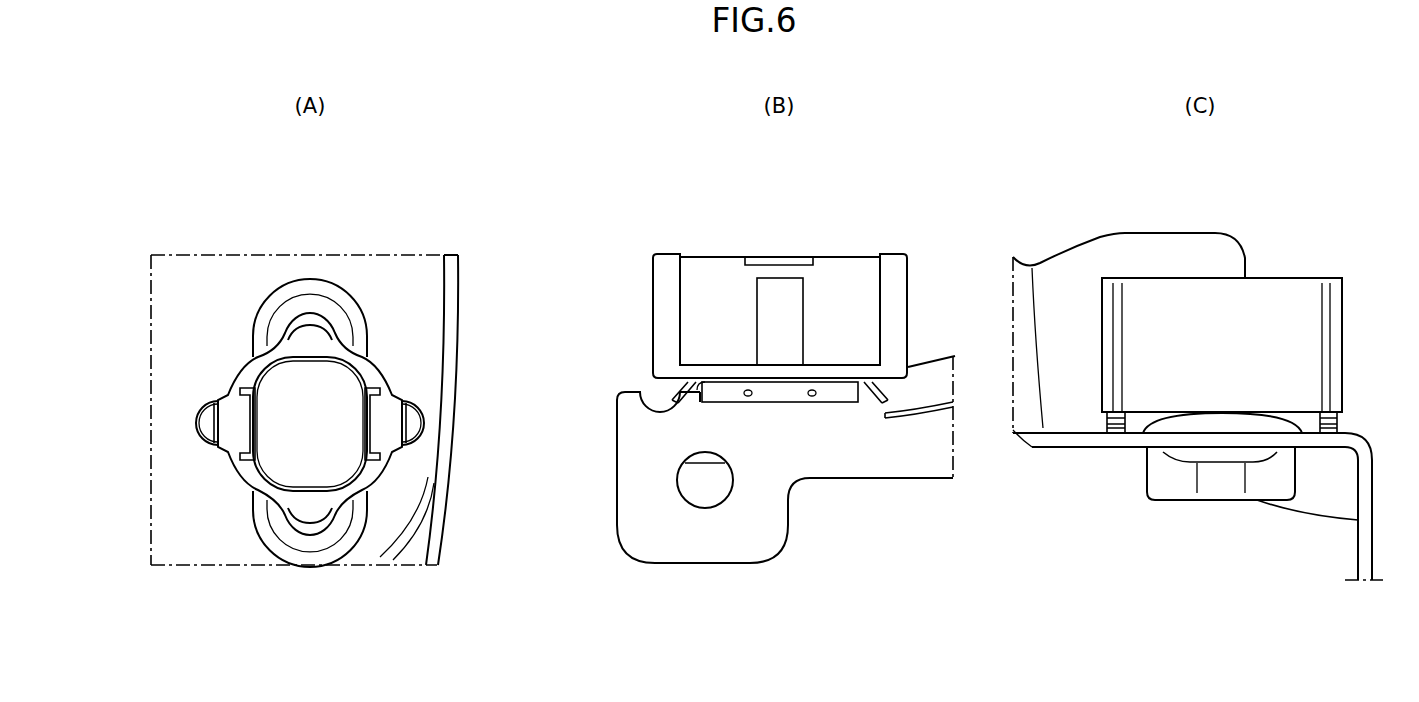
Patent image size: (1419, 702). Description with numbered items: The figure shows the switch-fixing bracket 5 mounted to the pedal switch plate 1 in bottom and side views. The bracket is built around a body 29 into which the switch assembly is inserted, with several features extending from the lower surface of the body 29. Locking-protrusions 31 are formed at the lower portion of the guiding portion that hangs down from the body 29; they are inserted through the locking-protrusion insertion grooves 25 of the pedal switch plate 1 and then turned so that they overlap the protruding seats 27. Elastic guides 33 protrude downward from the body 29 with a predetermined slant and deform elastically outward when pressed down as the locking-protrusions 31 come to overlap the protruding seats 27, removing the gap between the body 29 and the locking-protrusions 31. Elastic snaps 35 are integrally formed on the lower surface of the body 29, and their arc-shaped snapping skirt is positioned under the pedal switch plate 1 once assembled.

The pedal switch plate 1 is at (423, 319).
The switch-fixing bracket 5 is at (367, 477).
The locking-protrusion insertion grooves 25 is at (198, 440).
The protruding seats 27 is at (320, 302).
The body 29 is at (667, 277).
The locking-protrusions 31 is at (303, 330).
The elastic guides 33 is at (670, 400).
The elastic snaps 35 is at (198, 422).